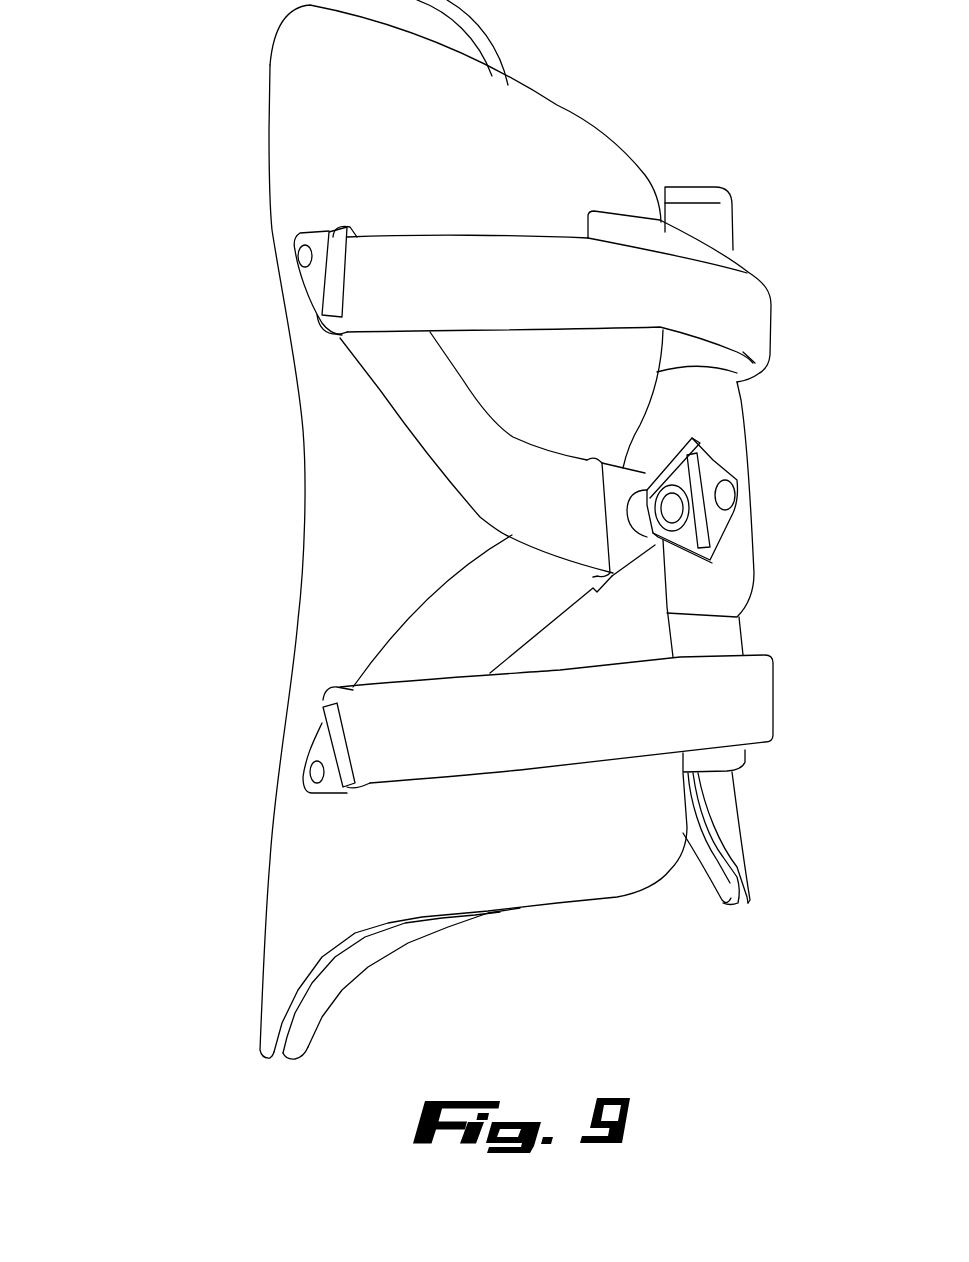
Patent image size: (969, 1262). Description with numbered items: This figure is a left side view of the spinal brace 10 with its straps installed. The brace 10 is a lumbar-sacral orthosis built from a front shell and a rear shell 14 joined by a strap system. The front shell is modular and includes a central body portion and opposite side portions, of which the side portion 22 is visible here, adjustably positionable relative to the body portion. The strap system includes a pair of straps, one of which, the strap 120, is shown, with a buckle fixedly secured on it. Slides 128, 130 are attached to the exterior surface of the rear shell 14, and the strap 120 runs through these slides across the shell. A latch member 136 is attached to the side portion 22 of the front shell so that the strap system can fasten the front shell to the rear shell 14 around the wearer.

The spinal brace 10 is at (134, 75).
The rear shell 14 is at (342, 448).
The side portion 22 is at (720, 583).
The strap 120 is at (507, 237).
The slide 128 is at (297, 233).
The slide 130 is at (313, 740).
The latch member 136 is at (710, 473).